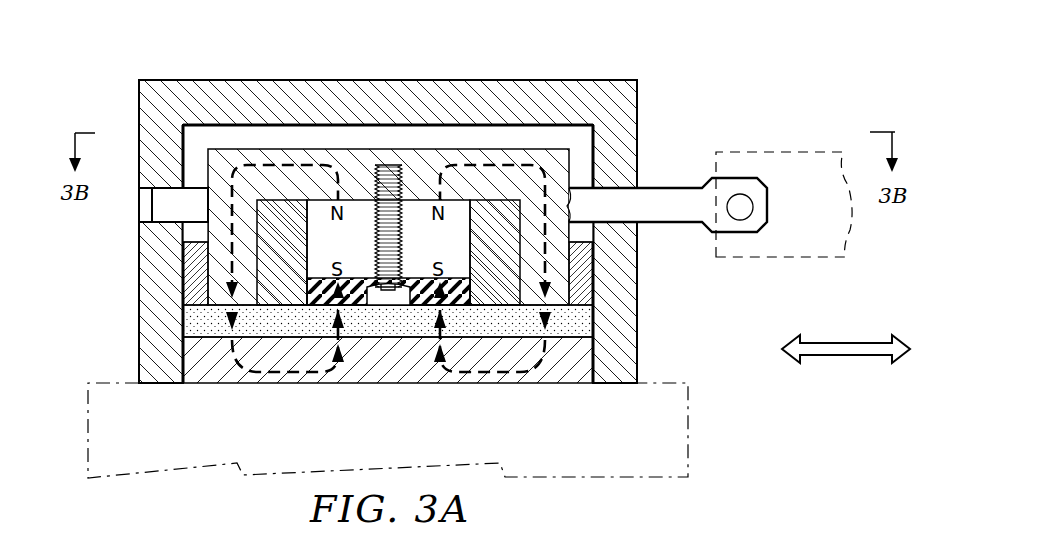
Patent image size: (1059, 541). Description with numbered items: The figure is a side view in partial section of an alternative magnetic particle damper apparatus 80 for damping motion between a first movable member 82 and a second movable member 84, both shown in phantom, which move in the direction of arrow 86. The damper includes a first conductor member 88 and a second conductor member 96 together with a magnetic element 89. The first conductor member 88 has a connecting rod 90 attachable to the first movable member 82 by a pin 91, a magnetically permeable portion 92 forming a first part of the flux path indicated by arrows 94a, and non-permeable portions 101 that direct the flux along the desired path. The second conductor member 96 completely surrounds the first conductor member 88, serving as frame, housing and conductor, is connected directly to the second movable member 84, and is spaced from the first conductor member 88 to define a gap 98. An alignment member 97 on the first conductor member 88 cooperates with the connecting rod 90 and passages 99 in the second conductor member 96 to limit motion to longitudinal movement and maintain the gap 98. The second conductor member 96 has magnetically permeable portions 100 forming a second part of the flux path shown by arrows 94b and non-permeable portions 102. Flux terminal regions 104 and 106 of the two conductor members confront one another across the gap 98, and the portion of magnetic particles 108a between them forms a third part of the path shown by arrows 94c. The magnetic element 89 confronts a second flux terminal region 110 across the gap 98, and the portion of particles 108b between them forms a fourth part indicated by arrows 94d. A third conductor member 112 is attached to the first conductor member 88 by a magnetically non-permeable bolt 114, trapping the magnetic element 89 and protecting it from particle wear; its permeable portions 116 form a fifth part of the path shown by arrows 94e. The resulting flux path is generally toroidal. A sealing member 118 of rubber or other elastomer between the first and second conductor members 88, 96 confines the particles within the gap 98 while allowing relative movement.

The magnetic particle damper apparatus 80 is at (742, 46).
The first movable member 82 is at (800, 152).
The second movable member 84 is at (690, 425).
The arrow 86 is at (860, 357).
The first conductor member 88 is at (523, 150).
The magnetic element 89 is at (391, 159).
The connecting rod 90 is at (694, 185).
The pin 91 is at (745, 207).
The magnetically permeable portion 92 is at (233, 158).
The first part of magnetic flux path 94a is at (282, 163).
The second part of magnetic flux path 94b is at (262, 384).
The third part of magnetic flux path 94c is at (195, 345).
The fourth part of magnetic flux path 94d is at (245, 312).
The fifth part of magnetic flux path 94e is at (312, 277).
The second conductor member 96 is at (162, 78).
The alignment member 97 is at (177, 197).
The gap 98 is at (210, 312).
The passages 99 is at (150, 225).
The magnetically permeable portions 100 is at (197, 384).
The non-permeable portions 101 is at (275, 225).
The magnetically non-permeable portions 102 is at (376, 97).
The flux terminal region 104 is at (200, 292).
The flux terminal region 106 is at (218, 384).
The portion of magnetic particles 108a is at (388, 327).
The portion of magnetic particles 108b is at (384, 359).
The second flux terminal region 110 is at (320, 384).
The third conductor member 112 is at (360, 306).
The magnetically non-permeable bolt 114 is at (408, 210).
The magnetically permeable portions 116 is at (345, 272).
The sealing member 118 is at (197, 265).